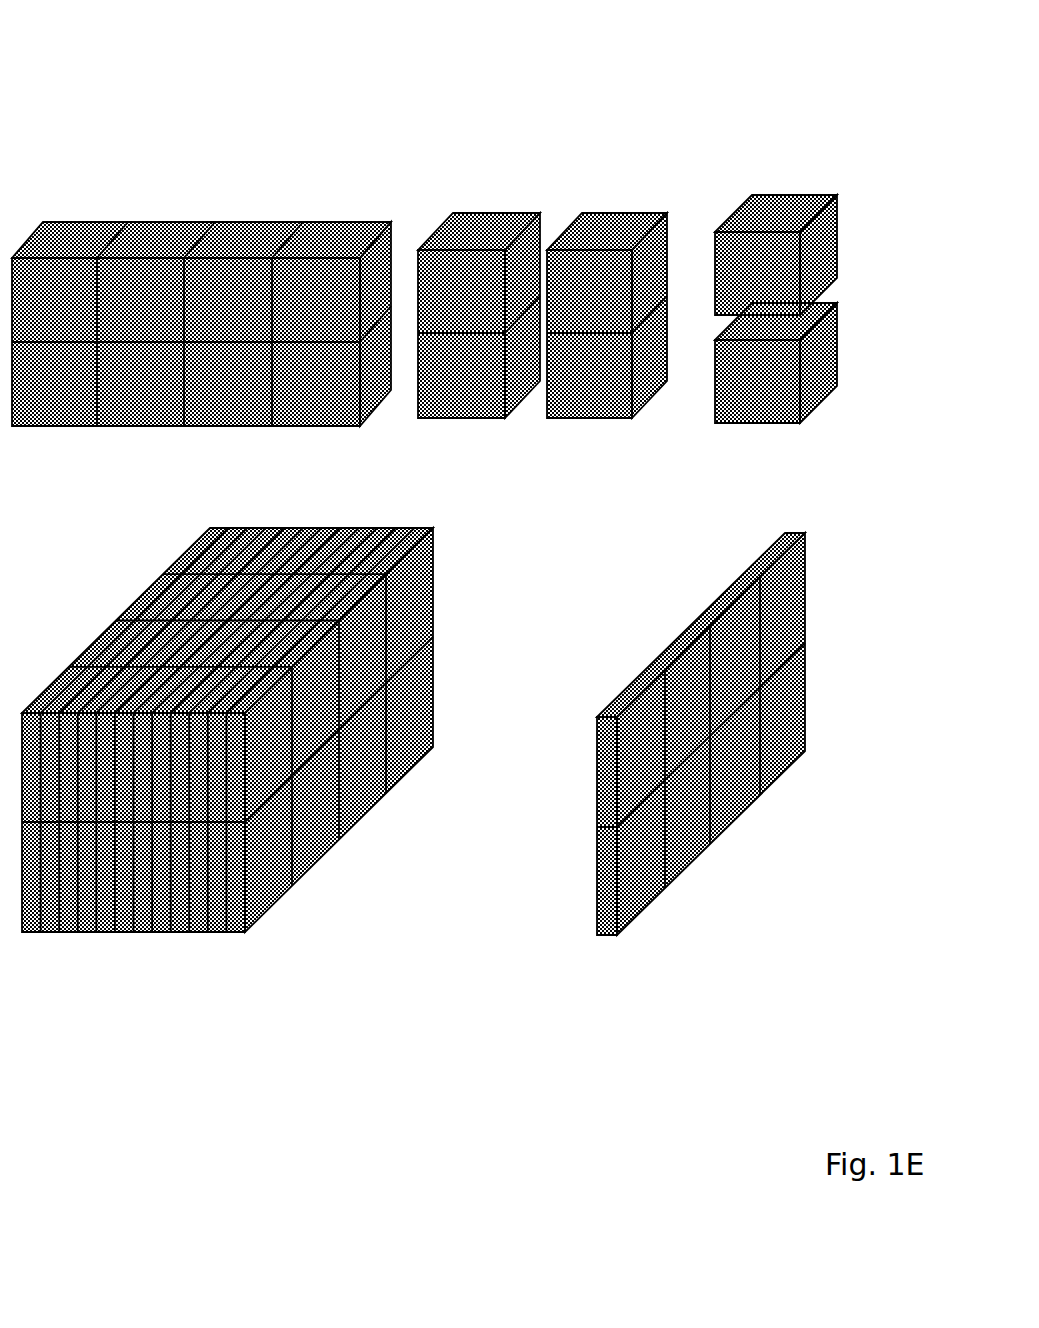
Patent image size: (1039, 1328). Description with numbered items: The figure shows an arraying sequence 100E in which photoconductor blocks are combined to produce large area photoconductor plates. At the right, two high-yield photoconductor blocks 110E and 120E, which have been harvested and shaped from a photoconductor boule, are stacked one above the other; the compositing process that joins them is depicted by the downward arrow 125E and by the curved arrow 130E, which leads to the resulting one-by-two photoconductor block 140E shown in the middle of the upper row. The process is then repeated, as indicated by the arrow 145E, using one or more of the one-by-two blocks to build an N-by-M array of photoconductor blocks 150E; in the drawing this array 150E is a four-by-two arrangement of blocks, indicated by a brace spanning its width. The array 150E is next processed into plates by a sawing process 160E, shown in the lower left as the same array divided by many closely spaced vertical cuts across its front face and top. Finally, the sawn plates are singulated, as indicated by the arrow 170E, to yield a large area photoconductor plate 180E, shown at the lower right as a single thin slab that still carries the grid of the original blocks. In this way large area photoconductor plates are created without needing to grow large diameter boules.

The process flow 100E is at (127, 104).
The photoconductor block 110E is at (806, 196).
The photoconductor block 120E is at (827, 398).
The compositing process 125E is at (889, 293).
The compositing process 130E is at (762, 438).
The 1×2 PC block 140E is at (667, 209).
The repeating process 145E is at (490, 288).
The N×M array of PC blocks 150E is at (384, 207).
The sawing process 160E is at (108, 472).
The singulation process 170E is at (559, 850).
The large area PC plate 180E is at (694, 868).